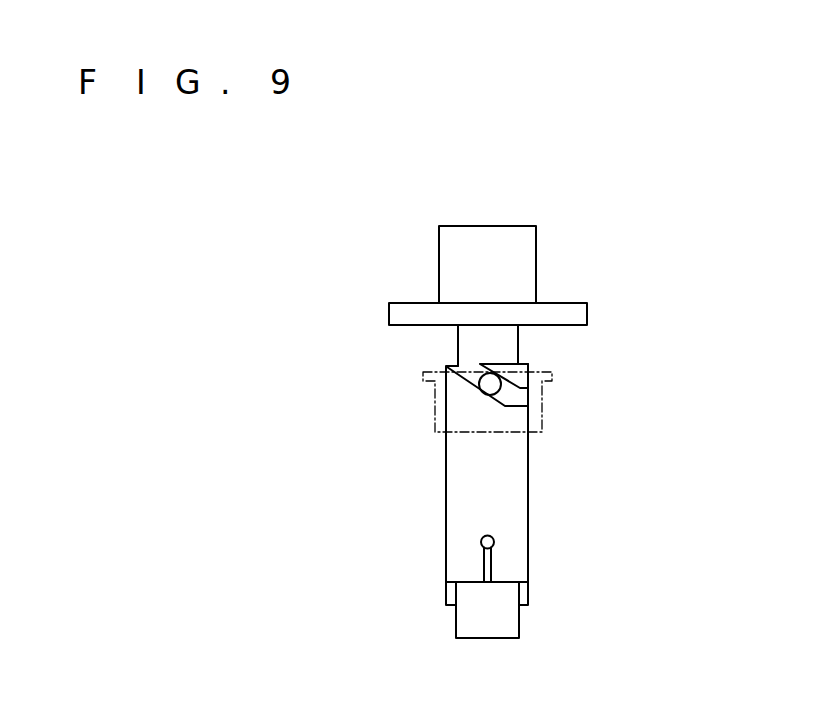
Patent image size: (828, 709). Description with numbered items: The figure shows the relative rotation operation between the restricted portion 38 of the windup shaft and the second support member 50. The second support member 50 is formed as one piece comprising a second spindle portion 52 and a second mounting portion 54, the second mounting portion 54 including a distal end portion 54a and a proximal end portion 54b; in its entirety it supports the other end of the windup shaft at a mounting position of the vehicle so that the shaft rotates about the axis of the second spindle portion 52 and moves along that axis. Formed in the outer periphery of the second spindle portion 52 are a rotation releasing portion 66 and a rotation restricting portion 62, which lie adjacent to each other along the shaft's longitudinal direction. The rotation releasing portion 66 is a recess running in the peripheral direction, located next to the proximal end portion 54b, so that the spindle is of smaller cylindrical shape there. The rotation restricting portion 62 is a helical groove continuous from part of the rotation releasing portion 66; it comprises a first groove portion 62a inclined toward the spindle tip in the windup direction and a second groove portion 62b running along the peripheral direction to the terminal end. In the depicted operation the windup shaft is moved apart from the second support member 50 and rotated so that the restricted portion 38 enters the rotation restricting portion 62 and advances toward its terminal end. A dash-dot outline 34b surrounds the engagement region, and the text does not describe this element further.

The second support member 50 is at (517, 408).
The second mounting portion 54 is at (545, 271).
The distal end portion 54a is at (603, 240).
The proximal end portion 54b is at (553, 302).
The rotation releasing portion 66 is at (583, 352).
The rotation restricting portion 62 is at (558, 409).
The first groove portion 62a is at (518, 407).
The second groove portion 62b is at (528, 385).
The restricted portion 38 is at (474, 379).
The housing opening 34b is at (382, 438).
The second spindle portion 52 is at (568, 556).